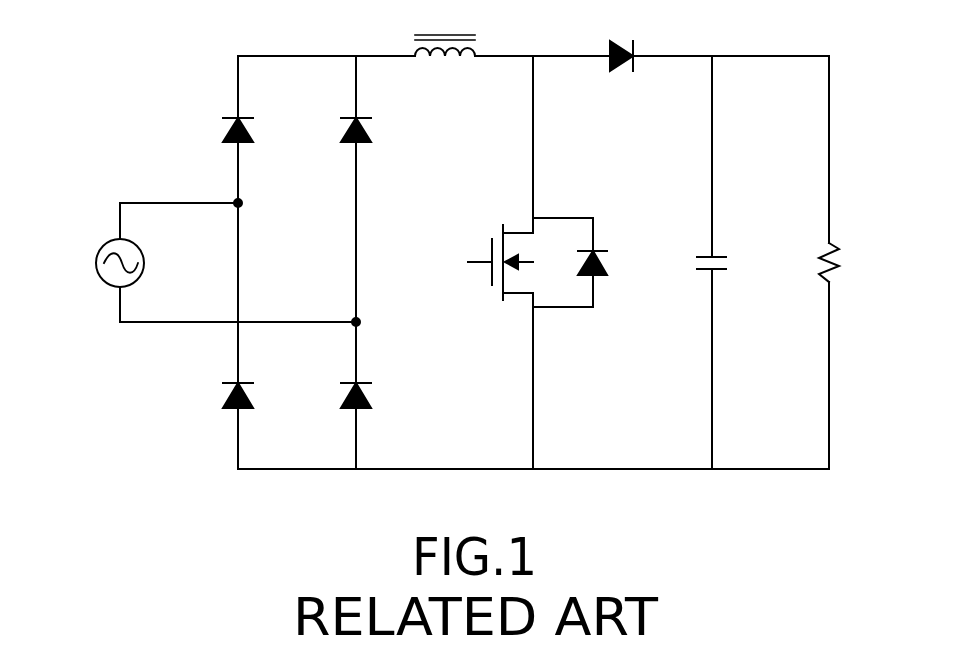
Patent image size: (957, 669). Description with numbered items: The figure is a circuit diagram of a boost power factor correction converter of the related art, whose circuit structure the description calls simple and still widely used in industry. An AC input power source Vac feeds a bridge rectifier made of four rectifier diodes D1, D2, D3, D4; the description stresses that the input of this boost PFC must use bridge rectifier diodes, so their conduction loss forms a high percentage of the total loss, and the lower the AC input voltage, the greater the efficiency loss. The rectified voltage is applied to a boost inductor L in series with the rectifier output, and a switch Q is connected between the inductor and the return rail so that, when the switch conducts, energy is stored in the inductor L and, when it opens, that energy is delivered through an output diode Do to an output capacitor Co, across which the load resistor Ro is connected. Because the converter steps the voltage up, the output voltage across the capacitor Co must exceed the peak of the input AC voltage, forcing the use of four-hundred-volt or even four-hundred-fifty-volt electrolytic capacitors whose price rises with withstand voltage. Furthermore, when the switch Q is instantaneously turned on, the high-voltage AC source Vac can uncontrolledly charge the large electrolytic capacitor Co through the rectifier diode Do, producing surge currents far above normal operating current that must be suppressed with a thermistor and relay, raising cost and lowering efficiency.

The AC input voltage source Vac is at (200, 262).
The bridge rectifier diode D1 is at (256, 132).
The bridge rectifier diode D2 is at (374, 132).
The bridge rectifier diode D3 is at (256, 397).
The bridge rectifier diode D4 is at (375, 397).
The boost inductor L is at (445, 64).
The switching transistor (MOSFET) with body diode Q is at (537, 253).
The output diode Do is at (623, 38).
The output capacitor Co is at (731, 268).
The load resistor Ro is at (848, 264).